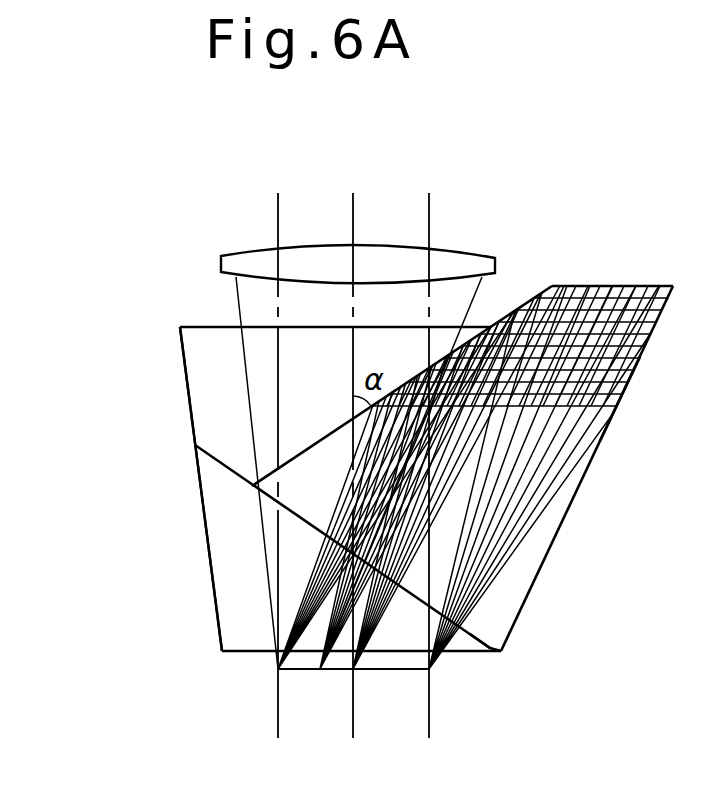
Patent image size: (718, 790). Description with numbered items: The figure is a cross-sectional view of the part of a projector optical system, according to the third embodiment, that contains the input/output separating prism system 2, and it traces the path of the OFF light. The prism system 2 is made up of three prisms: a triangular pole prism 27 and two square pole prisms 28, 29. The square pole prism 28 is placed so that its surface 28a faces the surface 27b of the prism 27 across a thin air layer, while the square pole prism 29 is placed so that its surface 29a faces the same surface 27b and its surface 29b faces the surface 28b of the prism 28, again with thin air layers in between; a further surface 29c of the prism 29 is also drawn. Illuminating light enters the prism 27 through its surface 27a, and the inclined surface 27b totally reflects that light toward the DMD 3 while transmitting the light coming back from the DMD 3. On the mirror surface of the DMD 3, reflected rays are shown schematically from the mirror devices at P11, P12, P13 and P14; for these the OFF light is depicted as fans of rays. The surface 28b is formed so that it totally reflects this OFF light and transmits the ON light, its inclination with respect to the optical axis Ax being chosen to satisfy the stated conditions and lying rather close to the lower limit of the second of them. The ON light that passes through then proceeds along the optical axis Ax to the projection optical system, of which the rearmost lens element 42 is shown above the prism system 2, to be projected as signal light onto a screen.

The optical axis Ax is at (353, 217).
The rearmost lens element 42 is at (219, 265).
The square pole prism 29 is at (207, 390).
The surface of square pole prism 29 29a is at (222, 458).
The surface of square pole prism 29 29b is at (458, 338).
The top surface 29c is at (200, 334).
The triangular pole prism 27 is at (212, 555).
The surface of triangular pole prism 27 27a is at (214, 626).
The surface of triangular pole prism 27 27b is at (473, 652).
The square pole prism 28 is at (553, 508).
The surface of square pole prism 28 28a is at (488, 637).
The surface of square pole prism 28 28b is at (583, 285).
The input/output separating prism system 2 is at (613, 450).
The DMD 3 is at (264, 667).
The mirror device position P11 is at (278, 670).
The mirror device position P12 is at (320, 670).
The mirror device position P13 is at (353, 670).
The mirror device position P14 is at (430, 670).